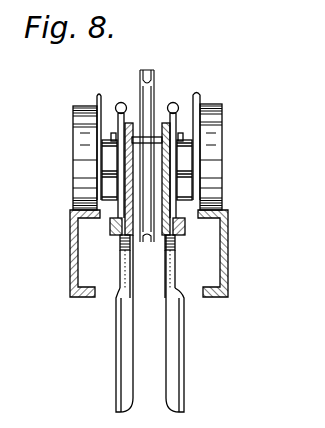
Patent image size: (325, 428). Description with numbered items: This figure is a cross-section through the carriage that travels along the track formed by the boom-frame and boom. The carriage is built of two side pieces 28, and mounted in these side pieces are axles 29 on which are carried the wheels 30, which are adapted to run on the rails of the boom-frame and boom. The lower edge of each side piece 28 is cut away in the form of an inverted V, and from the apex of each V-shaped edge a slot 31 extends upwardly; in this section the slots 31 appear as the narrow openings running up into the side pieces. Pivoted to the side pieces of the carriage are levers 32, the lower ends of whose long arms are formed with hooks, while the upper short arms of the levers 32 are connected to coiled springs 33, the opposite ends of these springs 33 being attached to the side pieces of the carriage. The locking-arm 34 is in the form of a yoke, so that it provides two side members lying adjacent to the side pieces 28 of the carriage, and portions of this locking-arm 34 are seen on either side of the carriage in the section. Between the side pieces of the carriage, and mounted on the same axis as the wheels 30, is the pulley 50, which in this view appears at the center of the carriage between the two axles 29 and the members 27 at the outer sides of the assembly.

The bracket 27 is at (70, 256).
The side pieces 28 is at (116, 343).
The axles 29 is at (186, 141).
The wheels 30 is at (77, 181).
The slots 31 is at (188, 264).
The levers 32 is at (124, 180).
The coiled springs 33 is at (115, 107).
The locking-arm 34 is at (116, 236).
The pulley 50 is at (143, 72).